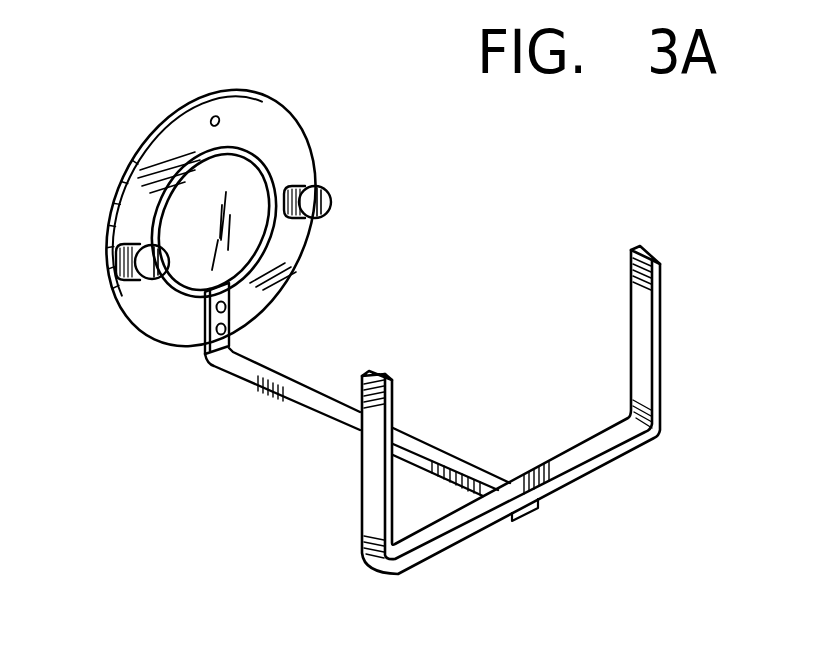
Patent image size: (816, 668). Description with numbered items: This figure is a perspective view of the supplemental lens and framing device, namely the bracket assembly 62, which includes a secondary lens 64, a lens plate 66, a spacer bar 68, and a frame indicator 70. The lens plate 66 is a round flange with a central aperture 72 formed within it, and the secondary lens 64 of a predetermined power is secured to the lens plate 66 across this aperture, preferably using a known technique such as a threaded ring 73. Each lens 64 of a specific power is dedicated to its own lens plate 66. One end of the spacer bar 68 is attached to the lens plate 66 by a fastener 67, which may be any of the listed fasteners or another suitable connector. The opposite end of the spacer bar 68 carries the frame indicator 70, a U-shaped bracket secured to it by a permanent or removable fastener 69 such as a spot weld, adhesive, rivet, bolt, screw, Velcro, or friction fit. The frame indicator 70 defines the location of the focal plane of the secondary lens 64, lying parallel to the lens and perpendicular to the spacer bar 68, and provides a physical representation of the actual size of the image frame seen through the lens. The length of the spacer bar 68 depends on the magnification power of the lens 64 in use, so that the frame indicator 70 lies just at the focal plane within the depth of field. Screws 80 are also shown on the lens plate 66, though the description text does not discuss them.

The bracket assembly 62 is at (262, 417).
The secondary lens 64 is at (198, 195).
The lens plate 66 is at (150, 317).
The fastener 67 is at (230, 328).
The spacer bar 68 is at (452, 462).
The fastener 69 is at (540, 497).
The frame indicator 70 is at (650, 375).
The central aperture 72 is at (237, 156).
The threaded ring 73 is at (270, 246).
The screw 80 is at (113, 265).